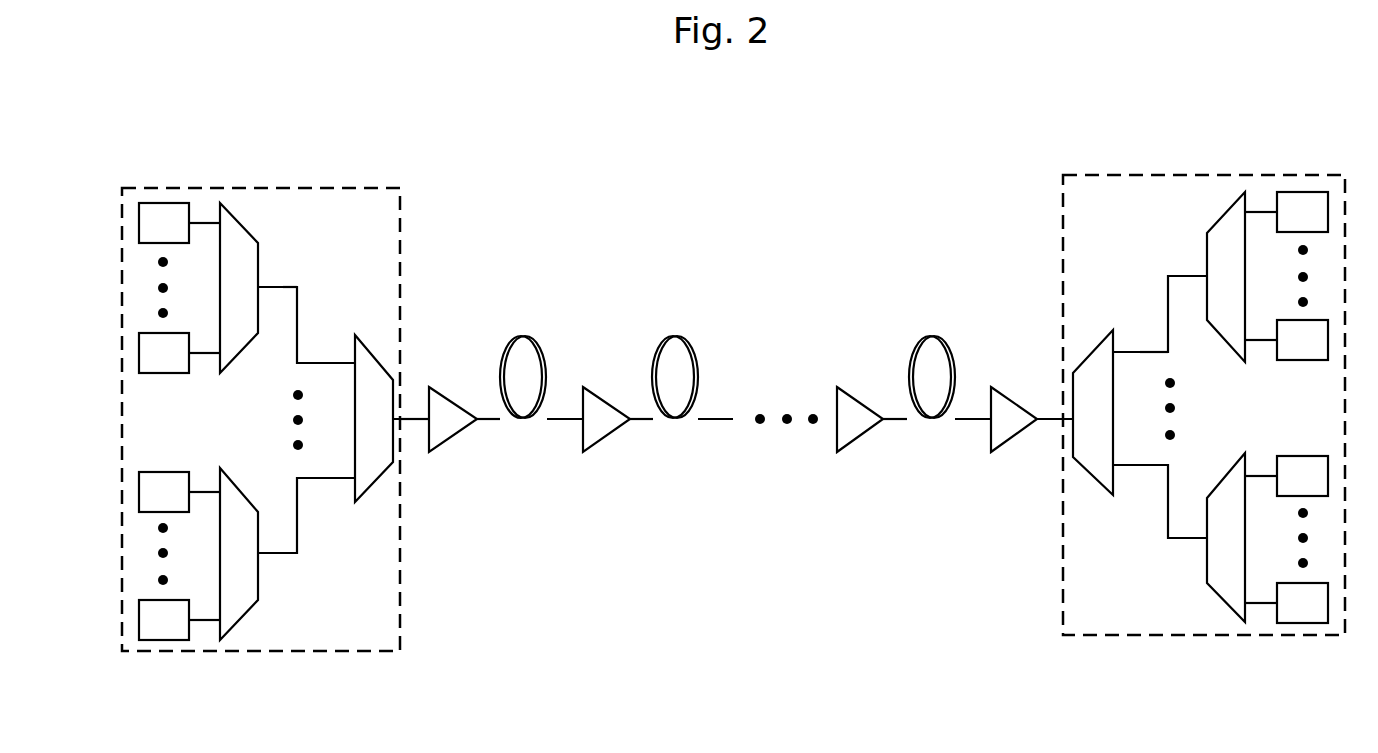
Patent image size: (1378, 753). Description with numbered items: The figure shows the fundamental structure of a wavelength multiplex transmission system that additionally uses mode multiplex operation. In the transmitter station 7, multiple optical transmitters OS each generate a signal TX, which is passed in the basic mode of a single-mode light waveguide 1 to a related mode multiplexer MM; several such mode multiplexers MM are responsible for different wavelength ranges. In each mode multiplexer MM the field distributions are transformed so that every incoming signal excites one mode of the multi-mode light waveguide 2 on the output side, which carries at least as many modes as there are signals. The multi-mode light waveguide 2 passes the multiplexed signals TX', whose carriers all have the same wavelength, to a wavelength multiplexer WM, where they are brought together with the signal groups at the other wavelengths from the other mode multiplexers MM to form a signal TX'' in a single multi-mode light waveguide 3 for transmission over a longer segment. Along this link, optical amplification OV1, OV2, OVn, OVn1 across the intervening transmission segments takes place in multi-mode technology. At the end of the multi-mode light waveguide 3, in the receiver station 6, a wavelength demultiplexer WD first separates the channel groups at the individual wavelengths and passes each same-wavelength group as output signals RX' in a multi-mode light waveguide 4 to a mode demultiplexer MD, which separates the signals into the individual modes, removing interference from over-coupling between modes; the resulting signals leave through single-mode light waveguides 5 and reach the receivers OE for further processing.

The single-mode light waveguide 1 is at (203, 216).
The multi-mode light waveguide 2 is at (300, 280).
The multi-mode light waveguide 3 is at (418, 423).
The multi-mode light waveguide 4 is at (1140, 465).
The single-mode light waveguide 5 is at (1263, 210).
The receiver station 6 is at (1140, 637).
The transmitter station 7 is at (400, 628).
The optical transmitter OS is at (163, 204).
The mode multiplexer MM is at (235, 250).
The wavelength multiplexer WM is at (367, 450).
The multiplexed signals TX' is at (356, 168).
The signal TX'' is at (430, 267).
The optical amplification OV1 is at (442, 410).
The optical amplification OV2 is at (597, 413).
The optical amplification OVn is at (850, 413).
The optical amplification OVn1 is at (1007, 408).
The wavelength demultiplexer WD is at (1075, 467).
The output signals of the wavelength demultiplexer RX' is at (1089, 215).
The mode demultiplexer MD is at (1223, 248).
The optical receivers RX OE is at (1302, 200).